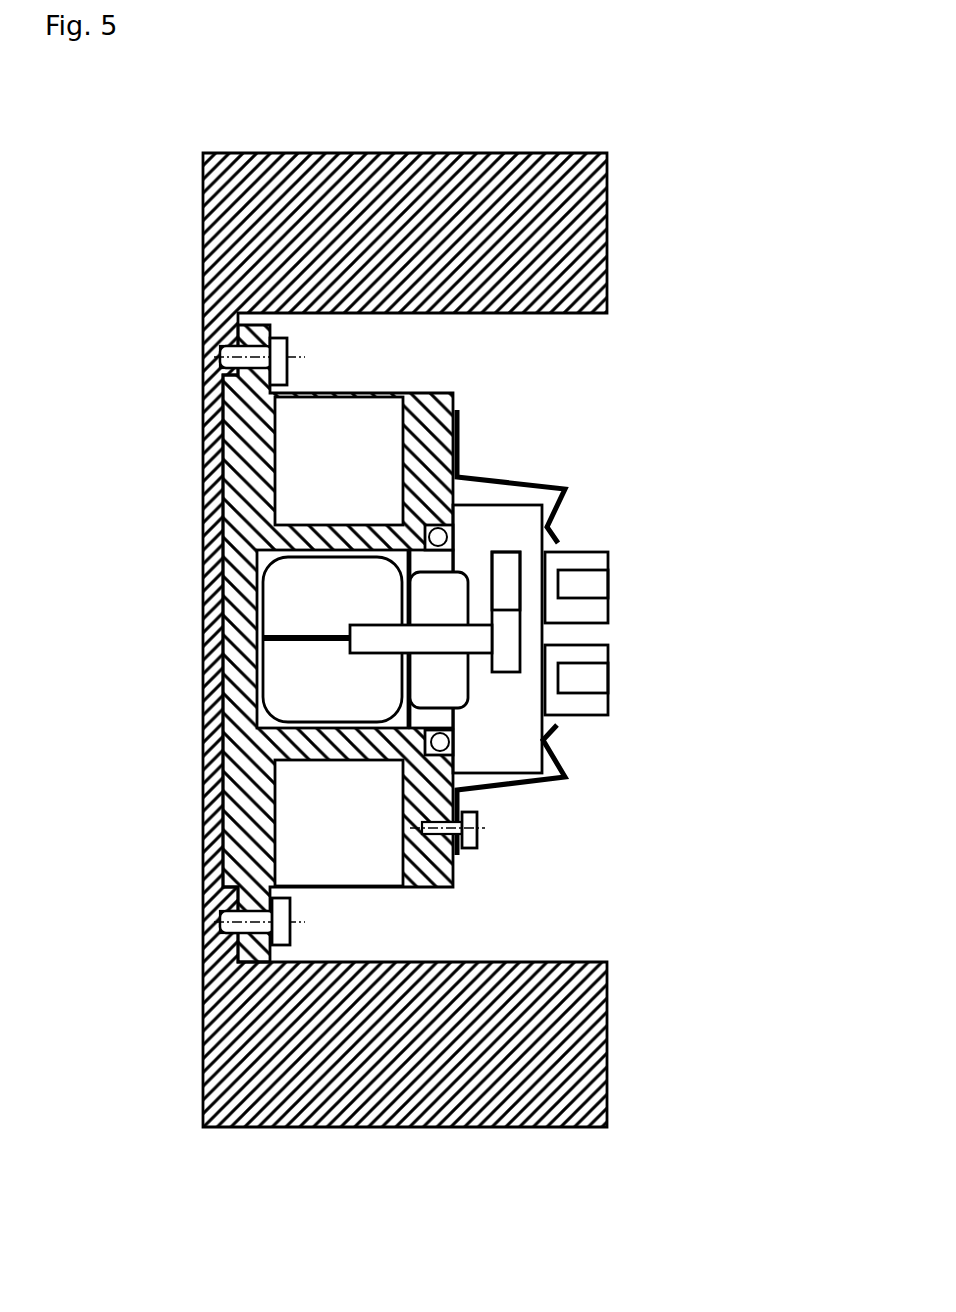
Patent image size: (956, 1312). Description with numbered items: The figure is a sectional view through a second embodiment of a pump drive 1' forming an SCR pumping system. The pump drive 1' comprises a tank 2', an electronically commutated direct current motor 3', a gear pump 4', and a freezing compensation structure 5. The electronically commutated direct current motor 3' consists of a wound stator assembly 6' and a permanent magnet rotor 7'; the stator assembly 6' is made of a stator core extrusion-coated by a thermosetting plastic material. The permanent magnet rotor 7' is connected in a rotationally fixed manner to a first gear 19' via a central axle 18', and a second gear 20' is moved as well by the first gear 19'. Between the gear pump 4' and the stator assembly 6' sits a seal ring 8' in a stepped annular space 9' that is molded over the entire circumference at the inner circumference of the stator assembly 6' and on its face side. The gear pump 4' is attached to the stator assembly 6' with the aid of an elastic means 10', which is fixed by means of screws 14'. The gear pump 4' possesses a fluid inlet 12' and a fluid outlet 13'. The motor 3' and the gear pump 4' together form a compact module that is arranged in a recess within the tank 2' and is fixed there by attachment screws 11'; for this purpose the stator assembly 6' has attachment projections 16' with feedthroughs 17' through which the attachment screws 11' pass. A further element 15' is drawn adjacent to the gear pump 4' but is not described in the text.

The pump drive 1' is at (406, 493).
The tank 2' is at (405, 682).
The electronically commutated direct current motor 3' is at (364, 643).
The gear pump 4' is at (497, 639).
The freezing compensation structure 5 is at (443, 698).
The wound stator assembly 6' is at (339, 641).
The permanent magnet rotor 7' is at (332, 639).
The seal ring 8' is at (485, 587).
The stepped annular space 9' is at (466, 563).
The elastic means 10' is at (531, 790).
The attachment screws 11' is at (291, 631).
The fluid inlet 12' is at (617, 693).
The fluid outlet 13' is at (620, 580).
The screws 14' is at (508, 854).
The upper spring contact 15' is at (545, 476).
The attachment projections 16' is at (178, 642).
The feedthroughs 17' is at (319, 644).
The central axle 18' is at (404, 615).
The first gear 19' is at (593, 612).
The second gear 20' is at (593, 539).